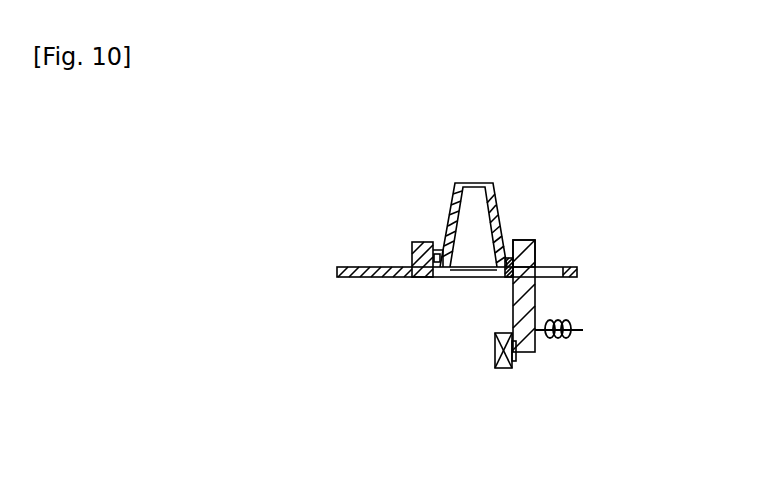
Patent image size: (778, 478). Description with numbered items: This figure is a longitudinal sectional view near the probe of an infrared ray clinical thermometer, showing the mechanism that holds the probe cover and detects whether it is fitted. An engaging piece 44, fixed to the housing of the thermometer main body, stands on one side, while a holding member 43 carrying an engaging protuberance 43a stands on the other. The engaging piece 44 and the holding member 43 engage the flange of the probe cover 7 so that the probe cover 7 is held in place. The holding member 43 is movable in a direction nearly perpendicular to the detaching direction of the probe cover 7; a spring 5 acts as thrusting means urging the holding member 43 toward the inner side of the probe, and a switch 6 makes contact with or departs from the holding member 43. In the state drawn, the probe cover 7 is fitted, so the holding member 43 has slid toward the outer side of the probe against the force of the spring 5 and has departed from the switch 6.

The engaging piece 44 is at (422, 240).
The holding member 43 is at (535, 295).
The engaging protuberance 43a is at (526, 240).
The probe cover 7 is at (517, 276).
The spring 5 is at (562, 335).
The switch 6 is at (505, 368).